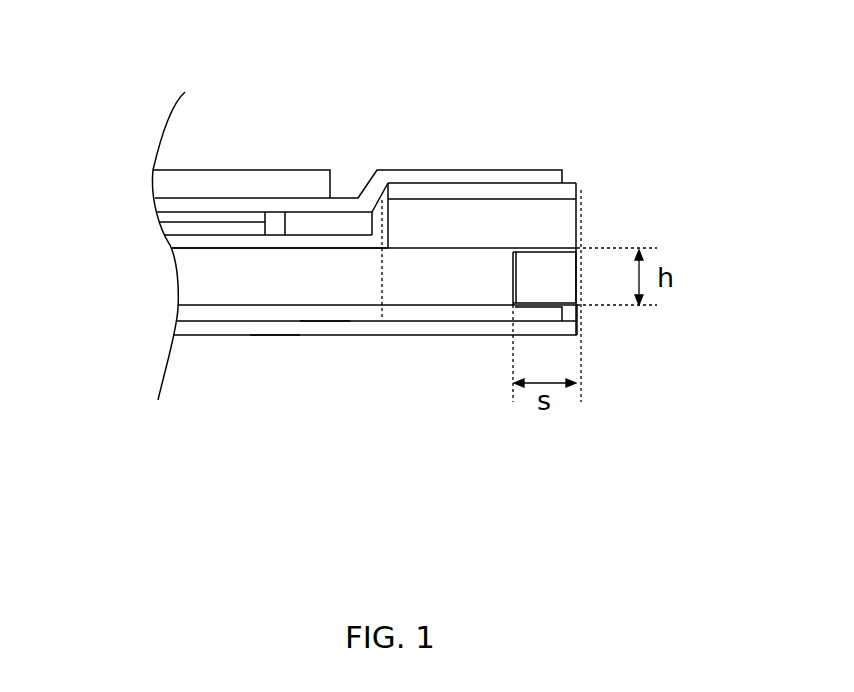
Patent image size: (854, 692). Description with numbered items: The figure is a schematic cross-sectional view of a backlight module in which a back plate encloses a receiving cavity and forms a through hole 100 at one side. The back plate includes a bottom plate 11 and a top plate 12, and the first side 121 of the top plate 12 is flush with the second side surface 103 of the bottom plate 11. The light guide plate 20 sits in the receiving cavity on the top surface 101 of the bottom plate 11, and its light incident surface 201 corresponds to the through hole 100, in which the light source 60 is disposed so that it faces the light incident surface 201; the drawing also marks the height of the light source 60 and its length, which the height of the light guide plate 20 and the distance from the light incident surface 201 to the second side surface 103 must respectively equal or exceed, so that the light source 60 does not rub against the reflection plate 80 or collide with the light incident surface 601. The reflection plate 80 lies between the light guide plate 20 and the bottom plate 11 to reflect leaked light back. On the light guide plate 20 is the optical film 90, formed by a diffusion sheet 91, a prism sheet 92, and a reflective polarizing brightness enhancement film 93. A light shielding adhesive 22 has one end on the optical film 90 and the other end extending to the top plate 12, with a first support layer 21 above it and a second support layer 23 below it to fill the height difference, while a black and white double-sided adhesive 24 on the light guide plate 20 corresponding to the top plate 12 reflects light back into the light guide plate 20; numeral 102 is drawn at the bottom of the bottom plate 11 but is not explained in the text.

The bottom plate 11 is at (213, 328).
The top plate 12 is at (497, 192).
The light guide plate 20 is at (193, 277).
The first support layer 21 is at (341, 222).
The light shielding adhesive 22 is at (405, 176).
The second support layer 23 is at (265, 188).
The black and white double-sided adhesive 24 is at (533, 233).
The light source 60 is at (553, 270).
The reflection plate 80 is at (193, 312).
The optical film 90 is at (225, 391).
The diffusion sheet 91 is at (170, 218).
The prism sheet 92 is at (170, 230).
The reflective polarizing brightness enhancement film 93 is at (175, 242).
The through hole 100 is at (382, 280).
The top surface of the bottom plate 101 is at (320, 322).
The second surface of substrate 102 is at (272, 335).
The second side surface of the bottom plate 103 is at (577, 325).
The first side of the top plate 121 is at (575, 190).
The light incident surface of the light guide plate 201 is at (507, 255).
The light incident surface 601 is at (515, 287).